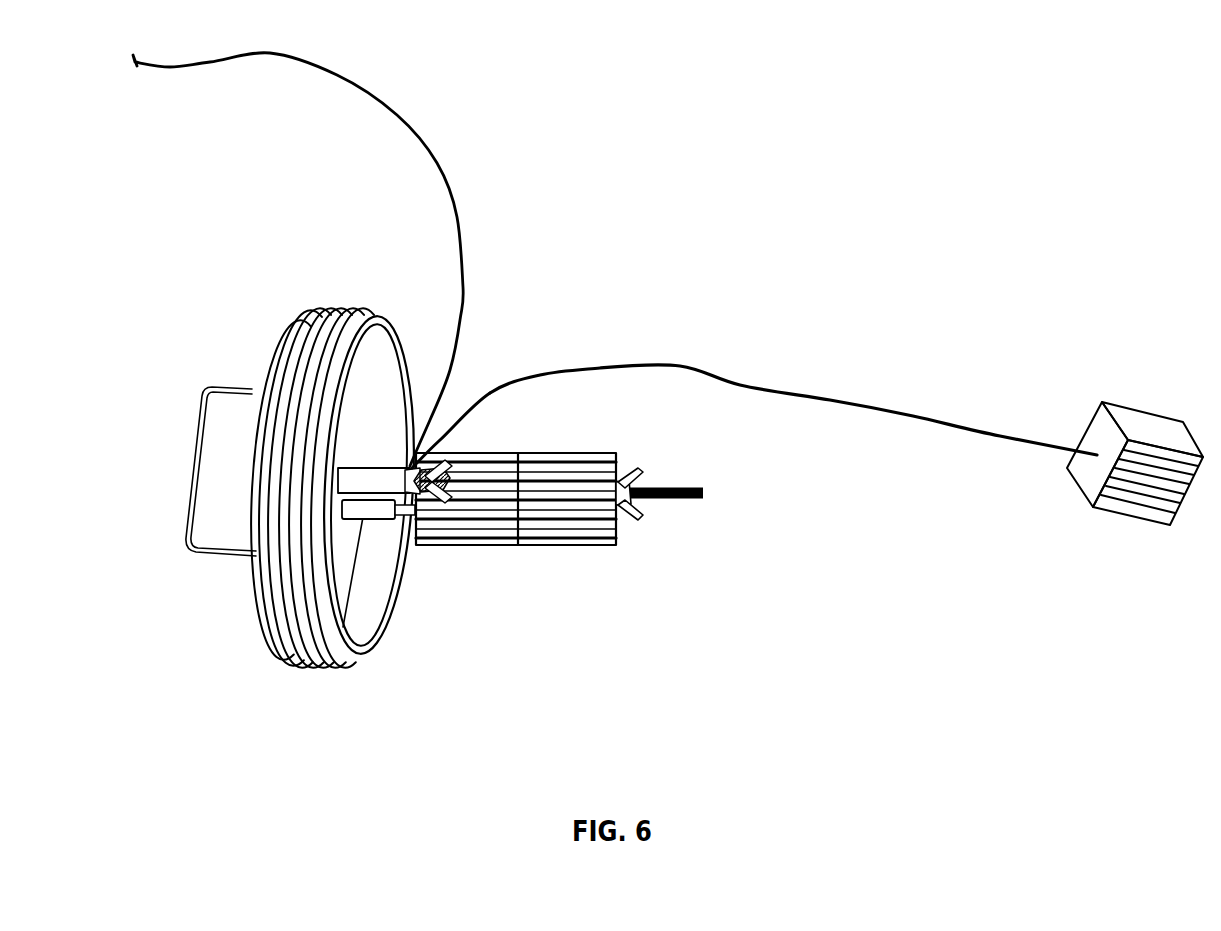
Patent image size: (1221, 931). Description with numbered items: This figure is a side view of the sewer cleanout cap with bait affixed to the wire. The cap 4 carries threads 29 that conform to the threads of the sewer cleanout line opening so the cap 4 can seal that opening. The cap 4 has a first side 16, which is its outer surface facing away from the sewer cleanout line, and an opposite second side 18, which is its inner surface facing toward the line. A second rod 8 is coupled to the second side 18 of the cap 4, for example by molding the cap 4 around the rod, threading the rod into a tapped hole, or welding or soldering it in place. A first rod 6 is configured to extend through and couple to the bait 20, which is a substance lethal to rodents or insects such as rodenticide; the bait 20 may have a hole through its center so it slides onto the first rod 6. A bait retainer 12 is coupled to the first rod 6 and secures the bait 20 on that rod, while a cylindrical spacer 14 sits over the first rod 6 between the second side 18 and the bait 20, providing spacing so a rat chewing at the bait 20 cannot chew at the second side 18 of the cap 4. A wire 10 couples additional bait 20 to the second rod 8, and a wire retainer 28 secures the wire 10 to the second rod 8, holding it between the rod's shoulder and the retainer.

The cap 4 is at (304, 494).
The first rod 6 is at (706, 494).
The second rod 8 is at (378, 478).
The wire 10 is at (917, 413).
The bait retainer 12 is at (628, 522).
The spacer 14 is at (380, 507).
The first side 16 is at (250, 594).
The second side 18 is at (347, 567).
The bait 20 is at (470, 548).
The wire retainer 28 is at (484, 392).
The threads 29 is at (318, 660).